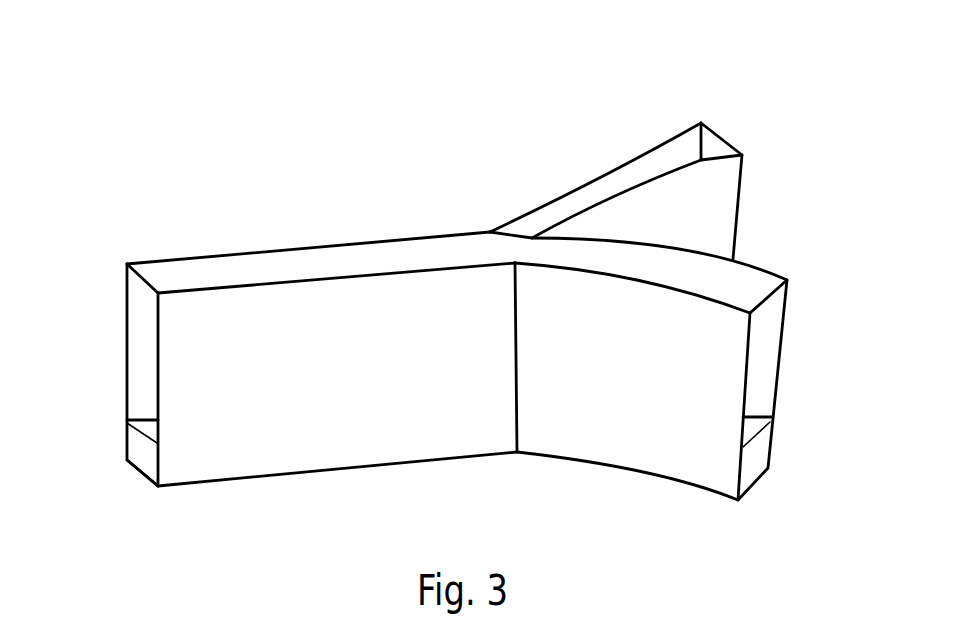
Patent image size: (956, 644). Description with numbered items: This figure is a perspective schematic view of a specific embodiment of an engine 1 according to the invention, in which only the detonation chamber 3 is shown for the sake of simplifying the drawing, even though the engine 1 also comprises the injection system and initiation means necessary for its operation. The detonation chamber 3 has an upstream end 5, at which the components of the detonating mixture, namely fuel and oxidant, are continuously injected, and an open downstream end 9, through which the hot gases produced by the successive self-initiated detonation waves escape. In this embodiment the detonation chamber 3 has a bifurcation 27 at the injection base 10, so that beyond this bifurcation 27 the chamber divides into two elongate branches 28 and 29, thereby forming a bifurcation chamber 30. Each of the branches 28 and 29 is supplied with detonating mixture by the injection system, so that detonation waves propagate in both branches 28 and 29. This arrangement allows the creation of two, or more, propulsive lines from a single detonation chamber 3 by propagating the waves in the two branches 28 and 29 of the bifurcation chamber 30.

The engine 1 is at (125, 187).
The detonation chamber 3 is at (102, 267).
The upstream end 5 is at (182, 500).
The open downstream end 9 is at (218, 253).
The injection base 10 is at (300, 482).
The bifurcation 27 is at (512, 472).
The elongate branch 28 is at (652, 127).
The elongate branch 29 is at (763, 257).
The bifurcation chamber 30 is at (428, 215).